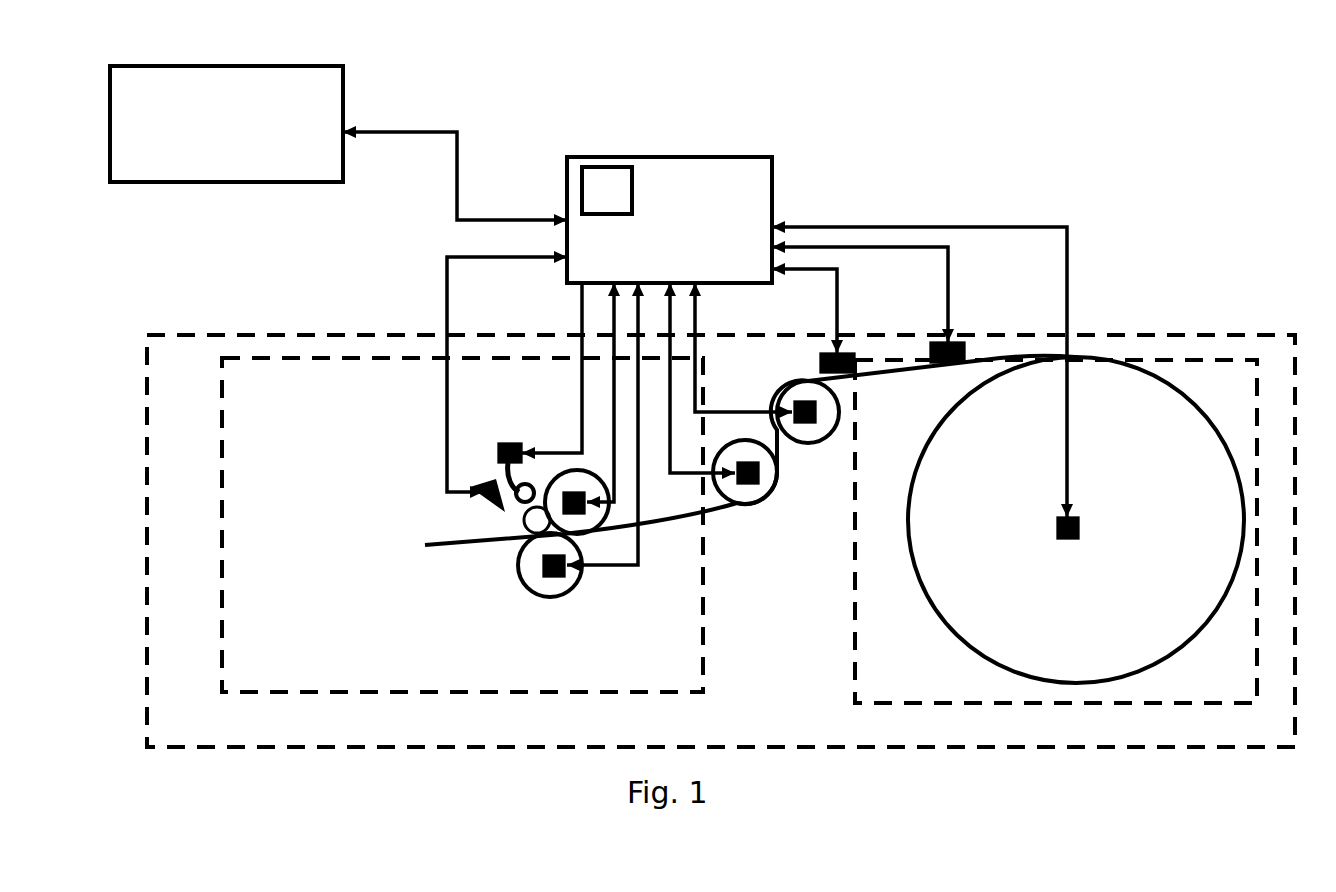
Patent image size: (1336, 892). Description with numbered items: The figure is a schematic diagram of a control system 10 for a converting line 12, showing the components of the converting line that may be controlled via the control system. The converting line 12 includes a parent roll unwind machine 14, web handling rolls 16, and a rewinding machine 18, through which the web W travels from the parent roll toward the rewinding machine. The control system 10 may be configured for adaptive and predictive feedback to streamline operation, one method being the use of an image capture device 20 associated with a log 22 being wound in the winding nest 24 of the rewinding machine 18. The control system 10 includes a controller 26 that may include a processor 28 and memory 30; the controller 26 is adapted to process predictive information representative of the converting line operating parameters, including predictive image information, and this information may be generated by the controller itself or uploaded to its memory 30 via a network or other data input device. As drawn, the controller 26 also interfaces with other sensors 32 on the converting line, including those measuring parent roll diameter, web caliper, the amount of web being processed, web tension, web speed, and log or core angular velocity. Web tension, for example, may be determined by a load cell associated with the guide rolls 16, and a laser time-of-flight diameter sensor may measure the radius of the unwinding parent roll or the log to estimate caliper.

The control system 10 is at (790, 118).
The converting line 12 is at (172, 387).
The parent roll unwind machine 14 is at (1205, 680).
The web handling rolls 16 is at (820, 440).
The rewinding machine 18 is at (647, 673).
The image capture device 20 is at (512, 513).
The log 22 is at (522, 522).
The winding nest 24 is at (522, 540).
The controller 26 is at (655, 240).
The processor 28 is at (593, 207).
The memory 30 is at (170, 139).
The sensors 32 is at (858, 352).
The web W is at (445, 548).